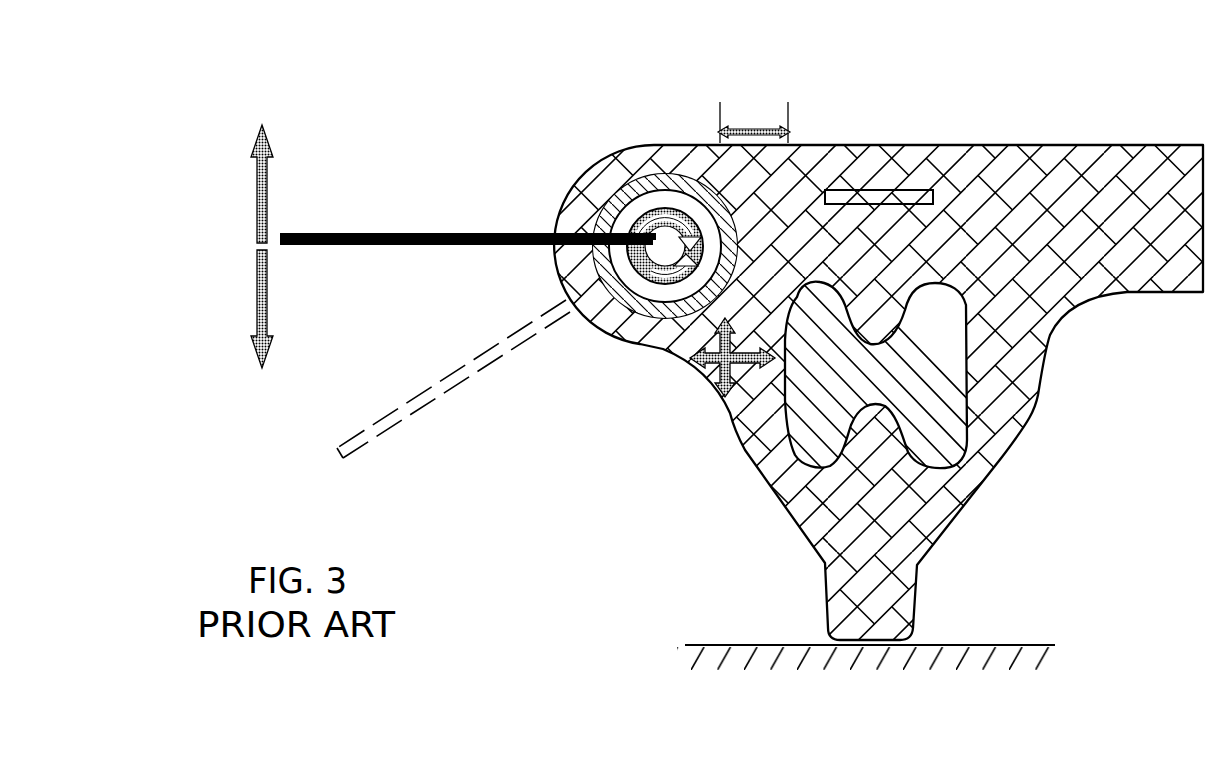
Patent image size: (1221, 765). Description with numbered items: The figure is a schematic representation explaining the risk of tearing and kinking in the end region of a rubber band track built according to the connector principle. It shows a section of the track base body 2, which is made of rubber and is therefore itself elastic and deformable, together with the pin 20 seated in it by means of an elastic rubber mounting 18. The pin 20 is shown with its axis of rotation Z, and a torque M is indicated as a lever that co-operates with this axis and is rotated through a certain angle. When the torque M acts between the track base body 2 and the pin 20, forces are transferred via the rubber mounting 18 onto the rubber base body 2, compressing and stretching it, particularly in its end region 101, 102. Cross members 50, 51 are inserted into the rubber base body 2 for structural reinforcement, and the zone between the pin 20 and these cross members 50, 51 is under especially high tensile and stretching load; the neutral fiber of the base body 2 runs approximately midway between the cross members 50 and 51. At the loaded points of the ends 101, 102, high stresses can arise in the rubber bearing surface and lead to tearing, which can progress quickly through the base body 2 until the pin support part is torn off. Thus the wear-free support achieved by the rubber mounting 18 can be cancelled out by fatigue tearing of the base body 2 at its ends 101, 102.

The track base body 2 is at (745, 450).
The rubber mounting 18 is at (615, 330).
The pin 20 is at (623, 165).
The cross member 50 is at (945, 408).
The cross member 51 is at (852, 190).
The end region of the rubber band track 101 is at (797, 94).
The end region of the rubber band track 102 is at (723, 410).
The axis of rotation Z is at (650, 240).
The torque M is at (378, 230).